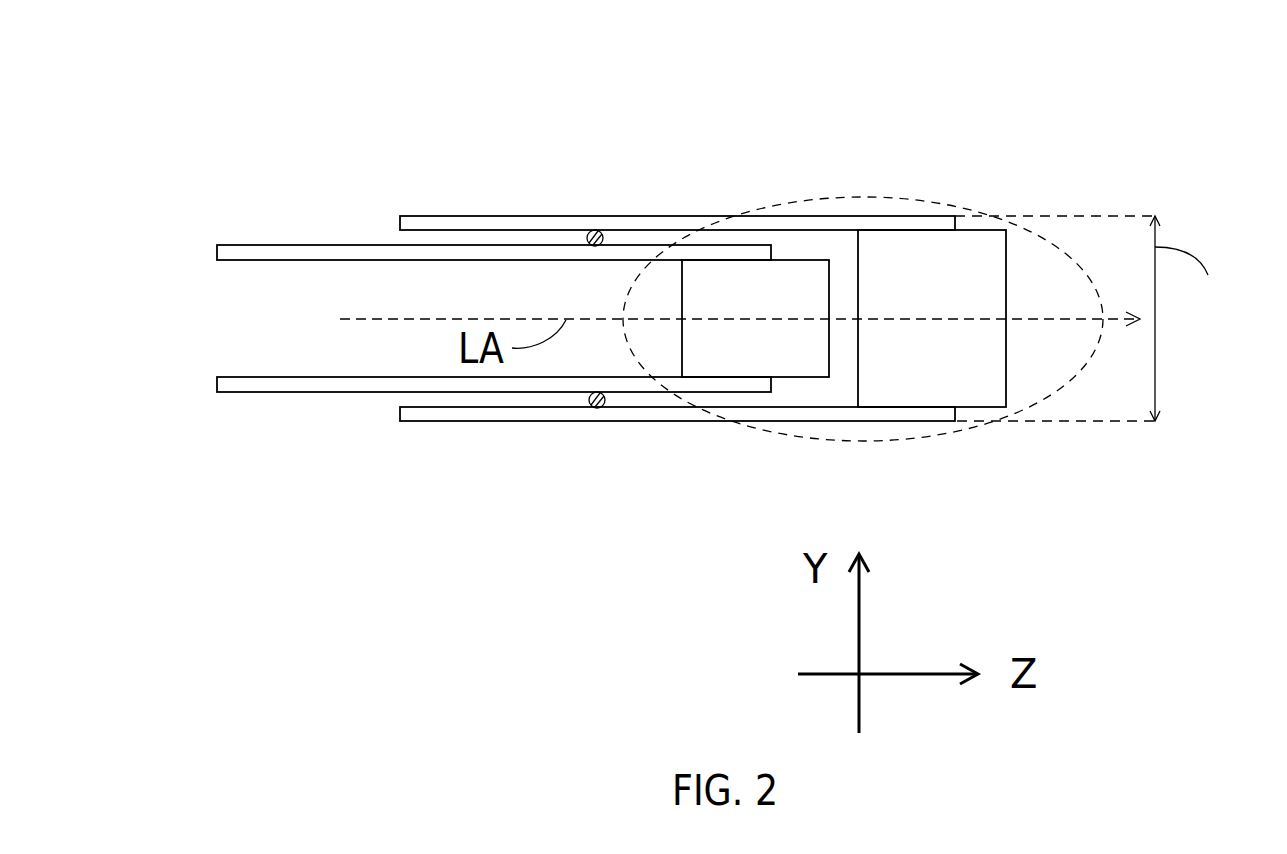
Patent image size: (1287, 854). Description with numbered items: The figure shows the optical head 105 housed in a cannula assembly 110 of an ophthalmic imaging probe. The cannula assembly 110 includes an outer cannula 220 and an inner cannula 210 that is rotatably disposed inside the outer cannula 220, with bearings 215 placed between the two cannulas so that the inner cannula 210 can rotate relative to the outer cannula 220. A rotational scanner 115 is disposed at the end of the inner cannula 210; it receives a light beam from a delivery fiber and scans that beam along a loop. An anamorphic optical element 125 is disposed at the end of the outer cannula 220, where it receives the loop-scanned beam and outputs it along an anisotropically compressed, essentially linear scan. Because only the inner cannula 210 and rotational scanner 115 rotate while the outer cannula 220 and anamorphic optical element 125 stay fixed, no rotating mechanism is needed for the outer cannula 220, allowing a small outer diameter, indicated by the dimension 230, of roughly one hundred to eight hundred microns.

The optical head 105 is at (917, 200).
The cannula assembly 110 is at (509, 112).
The rotational scanner 115 is at (792, 340).
The anamorphic optical element 125 is at (970, 340).
The inner cannula 210 is at (357, 262).
The bearings 215 is at (594, 230).
The outer cannula 220 is at (492, 215).
The outer diameter Dc 230 is at (1155, 408).